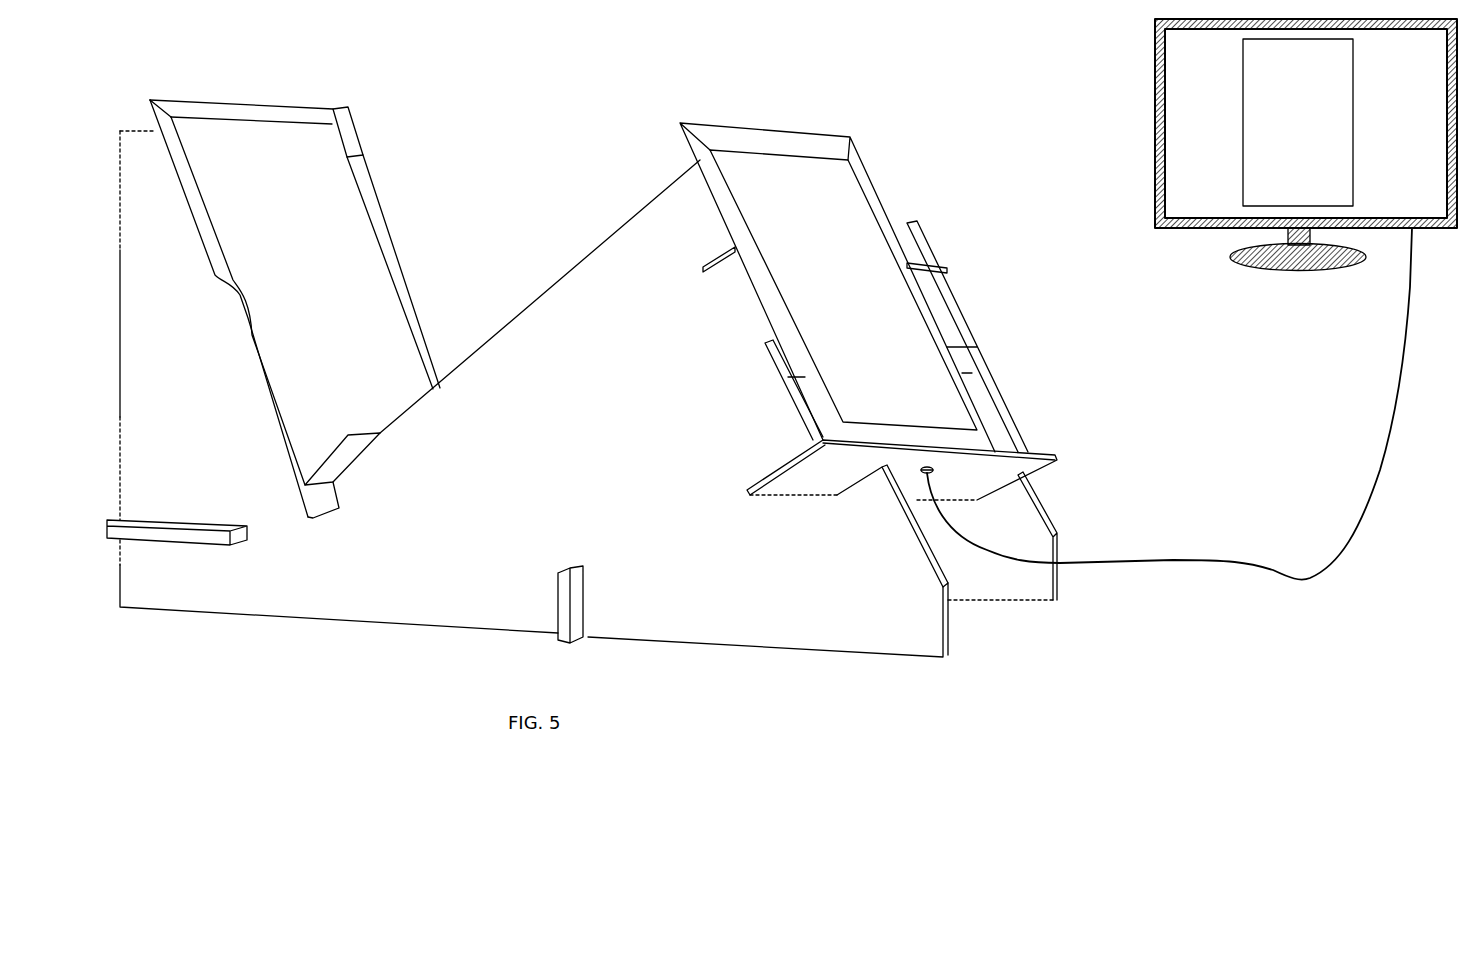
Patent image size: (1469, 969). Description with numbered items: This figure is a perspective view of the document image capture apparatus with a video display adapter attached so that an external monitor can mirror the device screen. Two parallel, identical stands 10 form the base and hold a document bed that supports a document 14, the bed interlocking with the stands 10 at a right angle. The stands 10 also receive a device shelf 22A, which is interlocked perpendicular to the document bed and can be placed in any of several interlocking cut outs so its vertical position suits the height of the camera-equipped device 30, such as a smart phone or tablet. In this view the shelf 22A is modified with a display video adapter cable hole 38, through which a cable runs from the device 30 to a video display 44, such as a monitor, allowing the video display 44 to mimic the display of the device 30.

The stand 10 is at (925, 621).
The document 14 is at (350, 235).
The device 30 is at (840, 152).
The device shelf 22A is at (1038, 456).
The display video adapter cable hole 38 is at (923, 487).
The video display 44 is at (1158, 167).